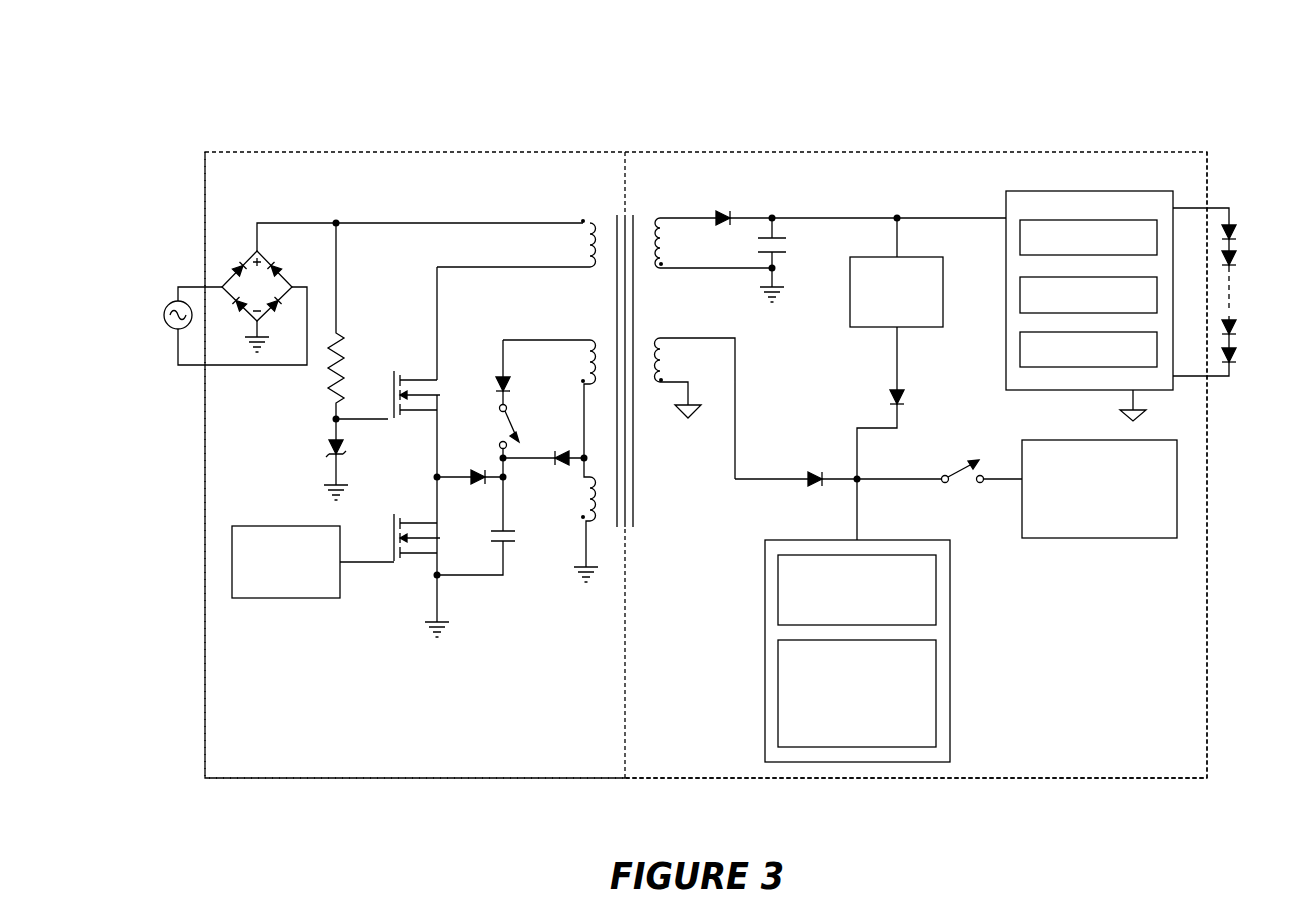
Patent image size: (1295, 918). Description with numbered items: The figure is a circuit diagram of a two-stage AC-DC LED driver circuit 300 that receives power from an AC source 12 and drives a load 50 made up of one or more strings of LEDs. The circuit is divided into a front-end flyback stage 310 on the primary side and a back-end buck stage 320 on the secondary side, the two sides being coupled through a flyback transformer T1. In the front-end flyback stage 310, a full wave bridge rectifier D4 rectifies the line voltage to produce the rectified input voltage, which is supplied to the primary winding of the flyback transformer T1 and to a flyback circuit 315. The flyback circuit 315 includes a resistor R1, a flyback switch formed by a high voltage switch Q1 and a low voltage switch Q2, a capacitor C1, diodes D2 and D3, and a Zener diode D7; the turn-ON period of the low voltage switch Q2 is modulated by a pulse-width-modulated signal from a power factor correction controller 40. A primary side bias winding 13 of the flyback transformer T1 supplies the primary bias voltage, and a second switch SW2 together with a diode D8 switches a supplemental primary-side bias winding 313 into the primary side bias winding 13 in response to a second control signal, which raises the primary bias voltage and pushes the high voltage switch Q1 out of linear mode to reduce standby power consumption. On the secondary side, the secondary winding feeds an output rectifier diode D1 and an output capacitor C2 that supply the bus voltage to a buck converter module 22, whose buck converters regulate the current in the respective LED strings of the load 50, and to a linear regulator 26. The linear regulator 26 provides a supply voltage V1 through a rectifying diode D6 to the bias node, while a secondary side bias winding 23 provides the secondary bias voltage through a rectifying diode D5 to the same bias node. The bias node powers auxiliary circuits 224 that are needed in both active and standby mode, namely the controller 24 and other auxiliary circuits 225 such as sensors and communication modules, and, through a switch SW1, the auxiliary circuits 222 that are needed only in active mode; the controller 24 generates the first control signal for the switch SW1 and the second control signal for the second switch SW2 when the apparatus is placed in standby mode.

The two-stage AC-DC LED driver circuit 300 is at (691, 98).
The front-end flyback stage 310 is at (483, 151).
The back-end buck stage 320 is at (855, 151).
The AC source 12 is at (172, 303).
The full wave bridge rectifier D4 is at (402, 287).
The resistor R1 is at (352, 321).
The high voltage switch Q1 is at (417, 421).
The low voltage switch Q2 is at (404, 557).
The flyback circuit 315 is at (307, 433).
The Zener diode D7 is at (321, 459).
The power factor correction controller 40 is at (313, 562).
The diode D2 is at (470, 464).
The capacitor C1 is at (476, 526).
The flyback transformer T1 is at (535, 371).
The supplemental primary-side bias winding 313 is at (588, 338).
The diode D8 is at (485, 372).
The second switch SW2 is at (527, 441).
The diode D3 is at (543, 469).
The primary side bias winding 13 is at (583, 518).
The diode D1 is at (830, 227).
The output capacitor C2 is at (736, 260).
The linear regulator 26 is at (896, 272).
The supply voltage V1 is at (913, 358).
The rectifying diode D6 is at (901, 464).
The secondary side bias winding 23 is at (660, 338).
The rectifying diode D5 is at (796, 466).
The switch SW1 is at (939, 488).
The auxiliary circuits needed during both active mode and standby mode 224 is at (765, 562).
The controller 24 is at (857, 590).
The other auxiliary circuits 225 is at (857, 693).
The buck converter module 22 is at (1089, 306).
The load 50 is at (1233, 223).
The auxiliary circuits only needed during active mode operation 222 is at (1099, 489).